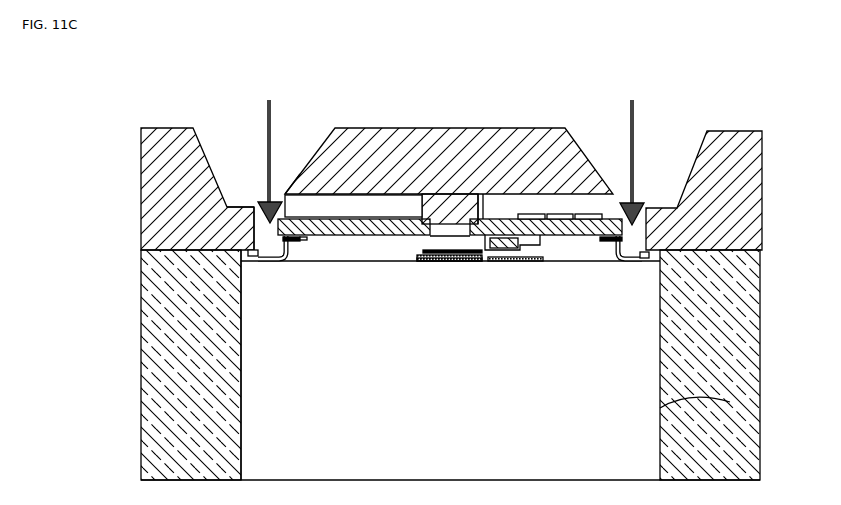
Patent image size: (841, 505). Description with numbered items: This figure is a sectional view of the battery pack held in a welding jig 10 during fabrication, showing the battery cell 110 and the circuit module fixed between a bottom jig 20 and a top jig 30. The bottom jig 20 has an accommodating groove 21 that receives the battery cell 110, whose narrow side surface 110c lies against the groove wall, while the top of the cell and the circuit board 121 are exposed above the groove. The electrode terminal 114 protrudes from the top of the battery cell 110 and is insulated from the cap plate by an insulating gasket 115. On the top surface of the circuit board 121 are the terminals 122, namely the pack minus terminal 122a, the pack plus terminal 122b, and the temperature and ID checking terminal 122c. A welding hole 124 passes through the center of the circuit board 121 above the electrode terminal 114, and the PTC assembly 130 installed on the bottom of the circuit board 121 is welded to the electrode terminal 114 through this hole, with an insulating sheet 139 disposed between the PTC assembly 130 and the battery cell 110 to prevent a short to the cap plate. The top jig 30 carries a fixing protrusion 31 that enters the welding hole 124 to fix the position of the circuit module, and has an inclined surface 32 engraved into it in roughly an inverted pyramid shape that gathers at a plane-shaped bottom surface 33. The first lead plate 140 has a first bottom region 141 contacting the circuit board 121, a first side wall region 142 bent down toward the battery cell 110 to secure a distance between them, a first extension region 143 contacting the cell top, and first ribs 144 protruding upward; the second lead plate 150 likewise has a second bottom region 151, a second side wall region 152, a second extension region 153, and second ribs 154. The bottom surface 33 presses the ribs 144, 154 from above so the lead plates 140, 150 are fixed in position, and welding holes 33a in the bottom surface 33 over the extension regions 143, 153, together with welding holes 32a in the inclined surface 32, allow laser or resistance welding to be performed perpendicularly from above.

The welding jig 10 is at (170, 118).
The bottom jig 20 is at (150, 313).
The accommodating groove 21 is at (232, 367).
The top jig 30 is at (152, 181).
The fixing protrusion 31 is at (448, 212).
The inclined surface 32 is at (327, 138).
The welding holes 32a is at (283, 188).
The bottom surface 33 is at (239, 203).
The welding holes 33a is at (256, 198).
The battery cell 110 is at (670, 345).
The narrow side surface 110c is at (730, 402).
The electrode terminal 114 is at (472, 262).
The insulating gasket 115 is at (447, 262).
The circuit board 121 is at (483, 196).
The terminals 122 is at (566, 144).
The pack minus terminal 122a is at (527, 213).
The pack plus terminal 122b is at (557, 213).
The temperature and ID checking terminal 122c is at (587, 213).
The welding hole 124 is at (433, 237).
The PTC assembly 130 is at (500, 266).
The insulating sheet 139 is at (522, 263).
The first lead plate 140 is at (635, 272).
The first bottom region 141 is at (597, 240).
The first side wall region 142 is at (613, 247).
The first extension region 143 is at (635, 262).
The first ribs 144 is at (647, 262).
The second lead plate 150 is at (268, 270).
The second bottom region 151 is at (305, 241).
The second side wall region 152 is at (290, 245).
The second extension region 153 is at (273, 263).
The second ribs 154 is at (253, 262).